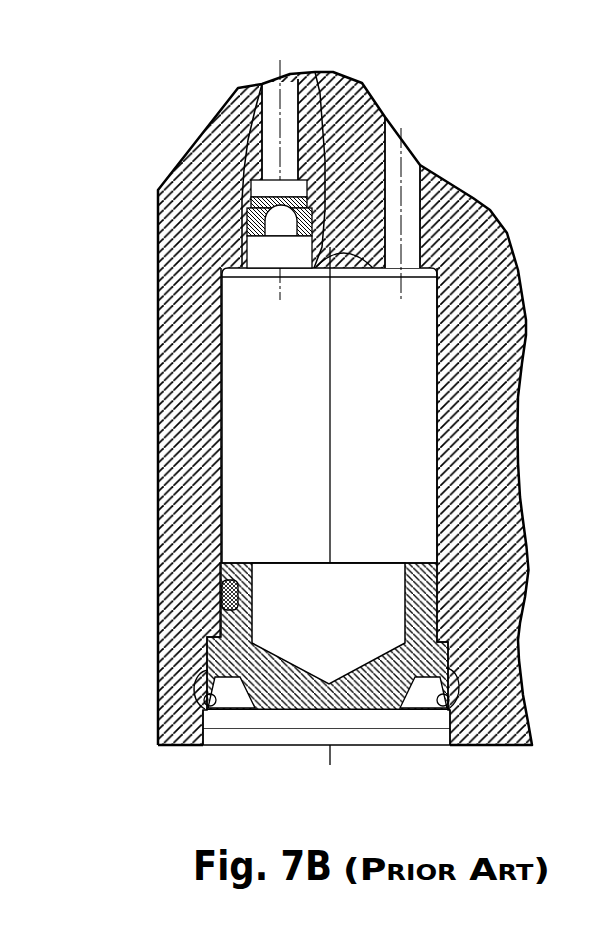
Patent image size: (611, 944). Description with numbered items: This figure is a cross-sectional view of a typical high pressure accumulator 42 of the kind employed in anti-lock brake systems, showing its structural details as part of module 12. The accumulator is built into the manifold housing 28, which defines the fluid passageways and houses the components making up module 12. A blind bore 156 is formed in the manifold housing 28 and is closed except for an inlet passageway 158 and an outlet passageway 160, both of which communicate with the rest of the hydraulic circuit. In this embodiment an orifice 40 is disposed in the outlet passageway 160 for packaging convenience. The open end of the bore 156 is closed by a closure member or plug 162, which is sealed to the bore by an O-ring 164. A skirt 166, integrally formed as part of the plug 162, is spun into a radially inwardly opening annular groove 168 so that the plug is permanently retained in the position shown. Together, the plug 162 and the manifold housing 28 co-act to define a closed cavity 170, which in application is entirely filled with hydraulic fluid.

The module 12 is at (493, 208).
The manifold housing 28 is at (511, 313).
The orifice 40 is at (247, 222).
The high pressure accumulator 42 is at (250, 755).
The blind bore 156 is at (205, 747).
The inlet passageway 158 is at (412, 168).
The outlet passageway 160 is at (278, 95).
The plug 162 is at (230, 649).
The O-ring 164 is at (217, 595).
The skirt 166 is at (433, 713).
The annular groove 168 is at (183, 702).
The closed cavity 170 is at (295, 440).